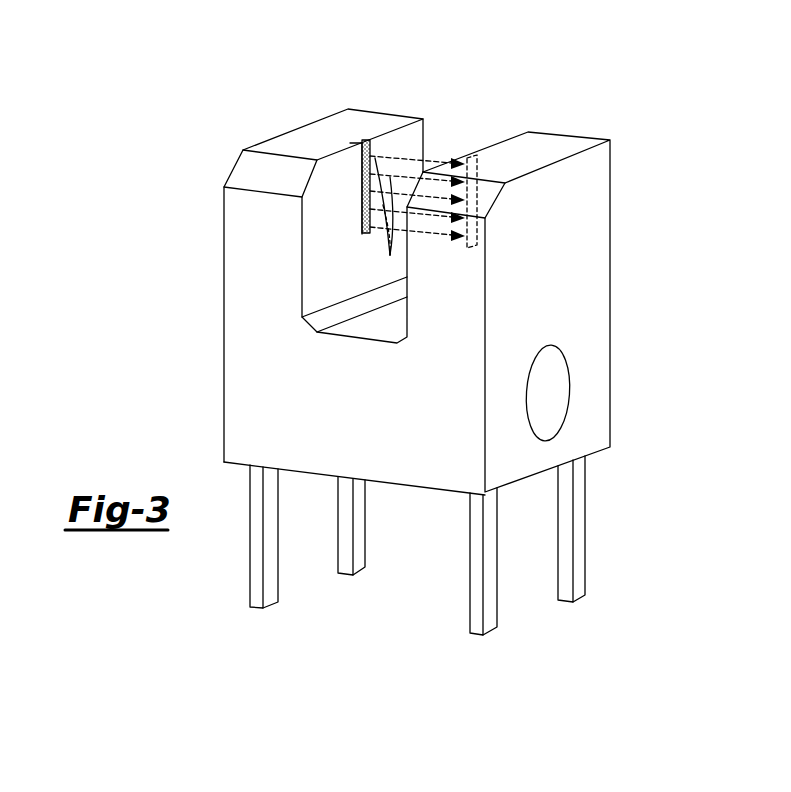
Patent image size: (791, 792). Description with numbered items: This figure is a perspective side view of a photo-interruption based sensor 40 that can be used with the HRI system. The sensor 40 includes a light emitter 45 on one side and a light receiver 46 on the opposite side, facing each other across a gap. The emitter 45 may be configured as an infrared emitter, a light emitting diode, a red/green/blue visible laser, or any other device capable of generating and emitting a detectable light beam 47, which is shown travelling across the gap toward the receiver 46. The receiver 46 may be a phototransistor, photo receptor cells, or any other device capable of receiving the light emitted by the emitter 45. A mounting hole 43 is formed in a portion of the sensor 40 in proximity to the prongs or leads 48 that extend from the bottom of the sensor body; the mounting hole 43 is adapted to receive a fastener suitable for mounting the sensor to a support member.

The sensor 40 is at (557, 82).
The mounting hole 43 is at (553, 405).
The light emitter 45 is at (362, 205).
The light receiver 46 is at (481, 160).
The light beam 47 is at (389, 220).
The leads 48 is at (470, 598).